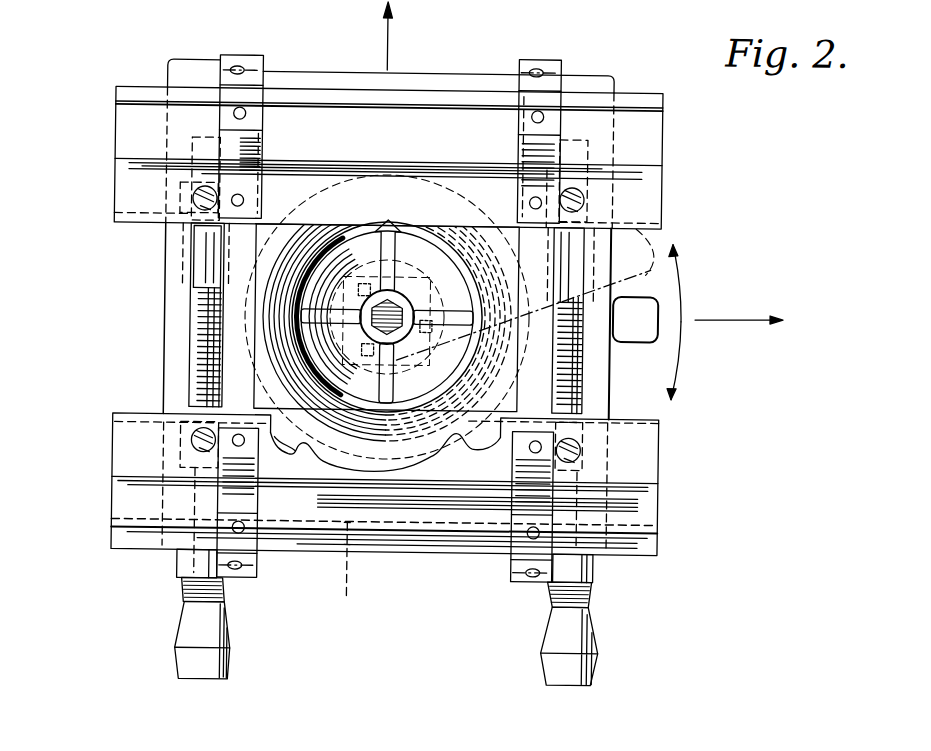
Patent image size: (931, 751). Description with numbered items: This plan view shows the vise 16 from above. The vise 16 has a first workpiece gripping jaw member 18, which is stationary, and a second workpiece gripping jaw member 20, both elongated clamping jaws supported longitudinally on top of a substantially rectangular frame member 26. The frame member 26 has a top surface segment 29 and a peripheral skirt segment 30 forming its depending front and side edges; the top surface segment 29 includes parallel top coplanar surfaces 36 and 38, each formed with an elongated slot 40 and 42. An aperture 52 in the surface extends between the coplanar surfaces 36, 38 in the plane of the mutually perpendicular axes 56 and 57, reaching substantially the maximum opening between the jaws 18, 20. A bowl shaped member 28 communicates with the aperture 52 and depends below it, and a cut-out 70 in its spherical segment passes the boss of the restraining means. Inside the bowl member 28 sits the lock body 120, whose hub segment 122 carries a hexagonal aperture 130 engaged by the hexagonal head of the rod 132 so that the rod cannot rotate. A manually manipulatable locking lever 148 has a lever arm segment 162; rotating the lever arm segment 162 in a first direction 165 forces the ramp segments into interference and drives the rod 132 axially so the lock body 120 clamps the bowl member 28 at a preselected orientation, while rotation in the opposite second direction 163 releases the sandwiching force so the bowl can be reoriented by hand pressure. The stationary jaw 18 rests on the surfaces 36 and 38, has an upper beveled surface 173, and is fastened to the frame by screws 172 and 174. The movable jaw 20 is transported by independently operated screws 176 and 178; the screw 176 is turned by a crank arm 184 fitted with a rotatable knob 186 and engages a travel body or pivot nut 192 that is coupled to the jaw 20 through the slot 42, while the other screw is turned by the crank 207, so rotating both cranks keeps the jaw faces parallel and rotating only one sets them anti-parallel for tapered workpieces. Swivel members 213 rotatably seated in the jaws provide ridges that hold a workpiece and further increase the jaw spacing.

The vise 16 is at (757, 159).
The first workpiece gripping jaw member 18 is at (660, 537).
The second workpiece gripping jaw member 20 is at (113, 143).
The frame member 26 is at (160, 349).
The bowl shaped member 28 is at (456, 432).
The top surface segment 29 is at (311, 456).
The peripheral skirt segment 30 is at (358, 569).
The top coplanar surface 36 is at (600, 403).
The top coplanar surface 38 is at (168, 306).
The elongated slot 40 is at (195, 383).
The elongated slot 42 is at (562, 376).
The aperture 52 is at (407, 412).
The axis 56 is at (389, 43).
The axis 57 is at (733, 322).
The cut-out 70 is at (425, 400).
The lock body 120 is at (452, 382).
The hub segment 122 is at (432, 286).
The hexagonal shaped aperture 130 is at (382, 308).
The rod 132 is at (397, 307).
The locking lever 148 is at (366, 405).
The lever arm segment 162 is at (648, 300).
The second direction 163 is at (681, 356).
The first direction 165 is at (683, 266).
The screw 172 is at (197, 448).
The upper beveled surface 173 is at (640, 502).
The screw 174 is at (600, 449).
The screw-threaded rod 176 is at (583, 354).
The screw-threaded rod 178 is at (198, 331).
The crank arm 184 is at (597, 570).
The rotatable knob 186 is at (598, 645).
The travel body 192 is at (188, 258).
The crank 207 is at (178, 566).
The swivel members 213 is at (240, 57).